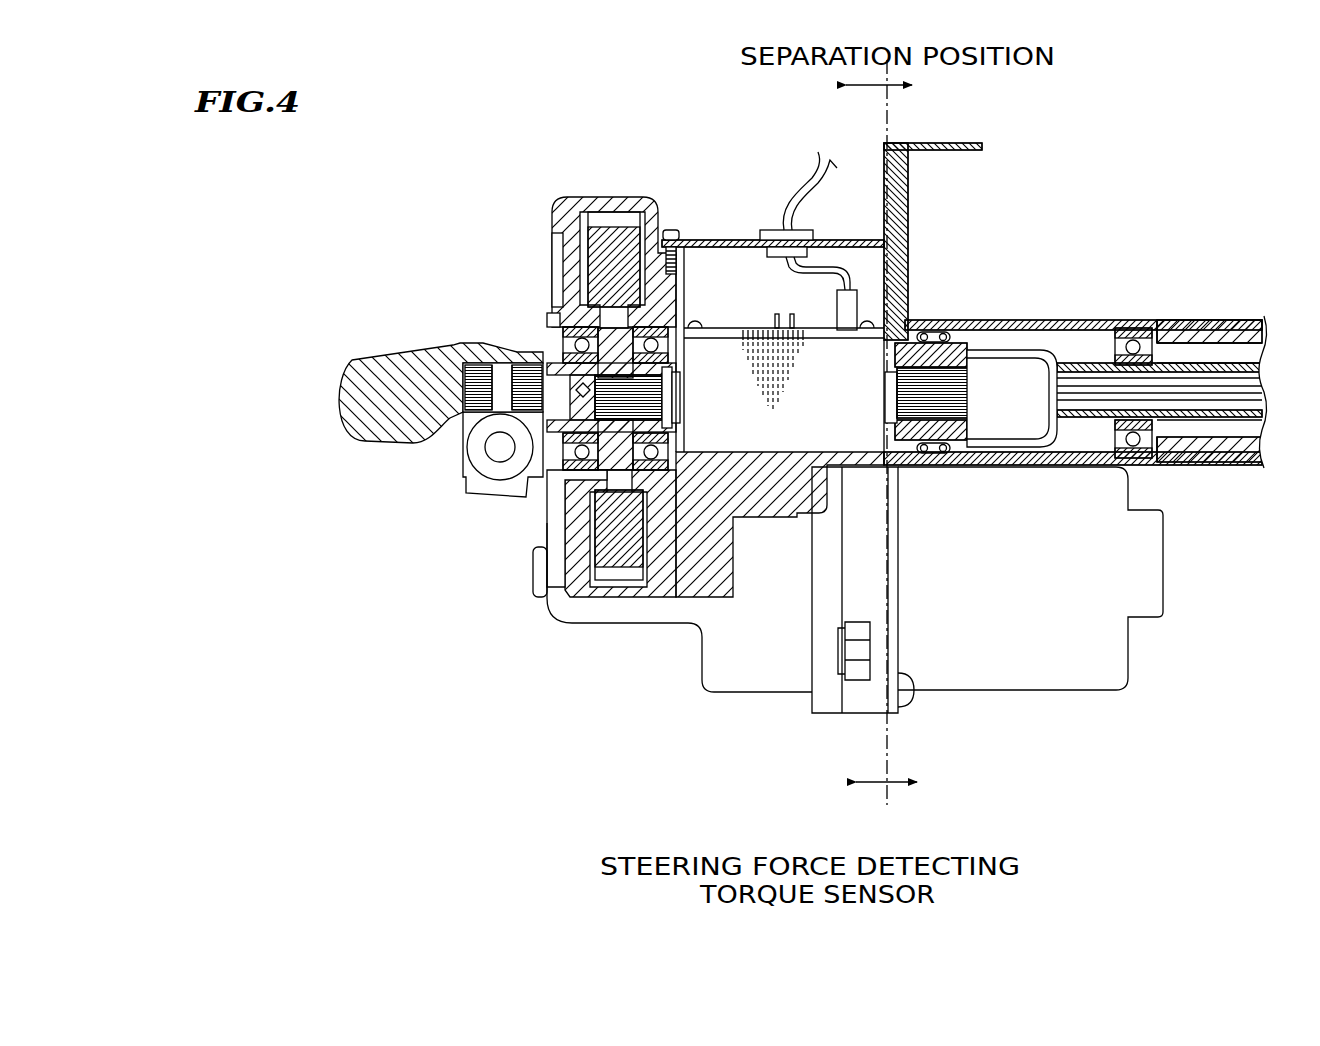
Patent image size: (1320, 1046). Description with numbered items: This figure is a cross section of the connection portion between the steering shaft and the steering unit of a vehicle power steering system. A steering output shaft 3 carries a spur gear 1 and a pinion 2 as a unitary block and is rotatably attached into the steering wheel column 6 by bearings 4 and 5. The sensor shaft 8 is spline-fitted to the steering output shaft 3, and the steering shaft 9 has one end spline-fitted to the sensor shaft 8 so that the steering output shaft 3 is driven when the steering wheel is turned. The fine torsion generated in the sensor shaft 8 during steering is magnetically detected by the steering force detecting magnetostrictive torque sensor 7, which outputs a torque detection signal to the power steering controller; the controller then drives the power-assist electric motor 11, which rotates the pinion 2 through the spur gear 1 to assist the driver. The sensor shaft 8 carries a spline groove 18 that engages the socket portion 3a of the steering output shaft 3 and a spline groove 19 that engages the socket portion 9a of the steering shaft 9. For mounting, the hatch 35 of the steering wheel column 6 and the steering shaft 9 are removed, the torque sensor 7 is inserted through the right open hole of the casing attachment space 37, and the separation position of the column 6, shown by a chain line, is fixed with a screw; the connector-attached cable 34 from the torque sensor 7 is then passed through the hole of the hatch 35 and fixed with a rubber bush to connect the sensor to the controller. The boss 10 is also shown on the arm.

The spur gear 1 is at (618, 553).
The pinion 2 is at (450, 348).
The steering output shaft 3 is at (545, 378).
The socket portion 3a is at (680, 392).
The bearing 4 is at (556, 482).
The bearing 5 is at (683, 403).
The steering wheel column 6 is at (620, 660).
The steering force detecting magnetostrictive torque sensor 7 is at (760, 437).
The sensor shaft 8 is at (897, 450).
The steering shaft 9 is at (1030, 330).
The socket portion 9a is at (1000, 440).
The boss 10 is at (482, 458).
The power-assist electric motor 11 is at (712, 690).
The spline groove 18 is at (722, 470).
The spline groove 19 is at (950, 350).
The connector-attached cable 34 is at (900, 275).
The hatch 35 is at (690, 240).
The casing attachment space 37 is at (777, 312).